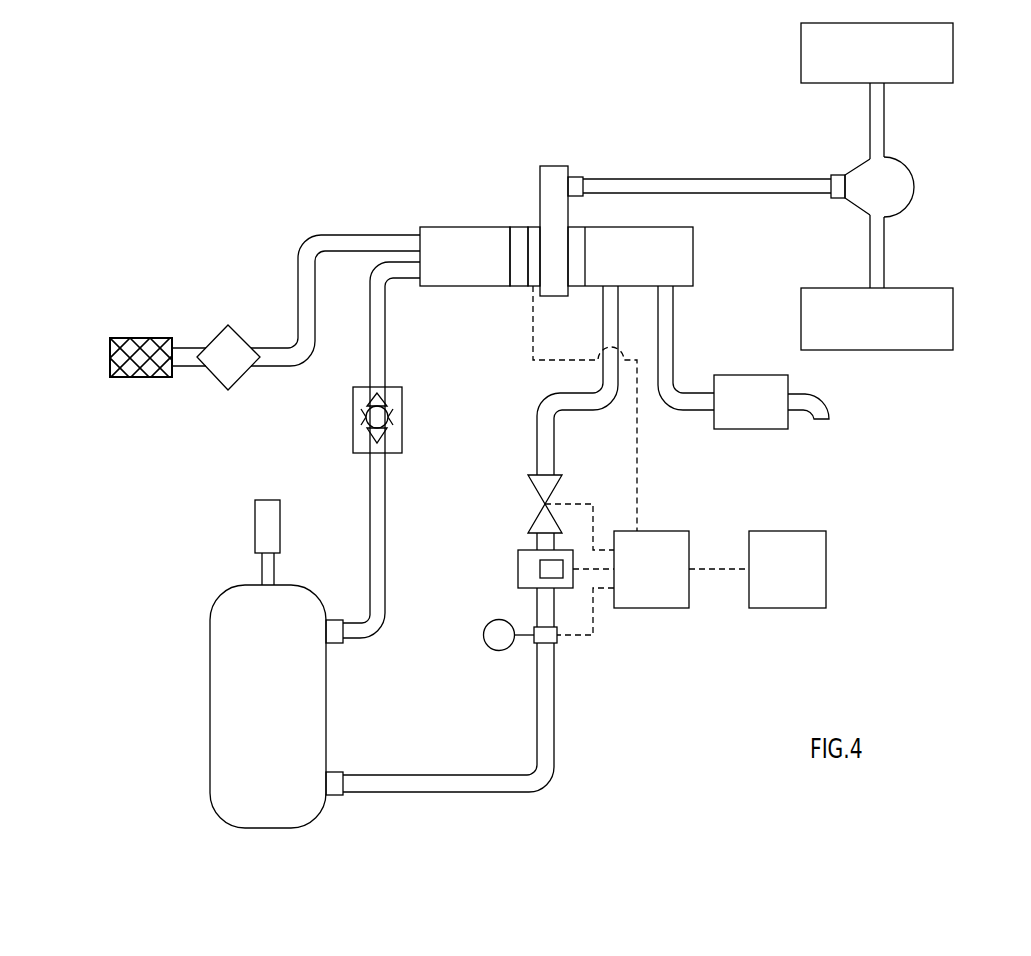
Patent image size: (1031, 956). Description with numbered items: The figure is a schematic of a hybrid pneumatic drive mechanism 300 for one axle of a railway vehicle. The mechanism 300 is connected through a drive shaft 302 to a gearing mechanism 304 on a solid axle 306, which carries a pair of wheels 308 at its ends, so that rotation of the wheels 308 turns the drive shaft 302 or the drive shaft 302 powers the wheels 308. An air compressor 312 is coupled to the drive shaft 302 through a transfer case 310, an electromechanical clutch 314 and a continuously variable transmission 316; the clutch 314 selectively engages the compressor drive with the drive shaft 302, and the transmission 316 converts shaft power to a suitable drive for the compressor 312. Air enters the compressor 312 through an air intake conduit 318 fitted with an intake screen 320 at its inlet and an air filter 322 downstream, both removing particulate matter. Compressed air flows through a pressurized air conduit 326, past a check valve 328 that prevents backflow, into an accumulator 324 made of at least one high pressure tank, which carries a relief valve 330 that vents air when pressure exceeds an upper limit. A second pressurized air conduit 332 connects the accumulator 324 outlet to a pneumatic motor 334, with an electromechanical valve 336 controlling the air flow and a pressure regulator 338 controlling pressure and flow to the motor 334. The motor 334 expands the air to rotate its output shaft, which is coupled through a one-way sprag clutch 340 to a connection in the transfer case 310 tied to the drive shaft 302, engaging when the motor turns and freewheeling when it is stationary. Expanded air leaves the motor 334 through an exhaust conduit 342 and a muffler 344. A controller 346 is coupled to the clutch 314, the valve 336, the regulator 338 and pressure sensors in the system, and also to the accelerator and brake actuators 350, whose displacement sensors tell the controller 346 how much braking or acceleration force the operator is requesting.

The hybrid pneumatic drive mechanism 300 is at (376, 137).
The drive shaft 302 is at (620, 179).
The gearing mechanism 304 is at (884, 190).
The solid axle 306 is at (884, 110).
The wheels 308 is at (953, 53).
The transfer case 310 is at (555, 166).
The air compressor 312 is at (457, 286).
The electromechanical clutch 314 is at (533, 227).
The continuously variable transmission 316 is at (516, 286).
The air intake conduit 318 is at (298, 313).
The intake screen 320 is at (140, 377).
The air filter 322 is at (244, 374).
The accumulator 324 is at (210, 707).
The pressurized air conduit 326 is at (385, 557).
The check valve 328 is at (370, 415).
The relief valve 330 is at (255, 527).
The pressurized air conduit 332 is at (437, 792).
The pneumatic motor 334 is at (693, 257).
The electromechanical valve 336 is at (537, 493).
The pressure regulator 338 is at (518, 570).
The sprag clutch 340 is at (578, 287).
The exhaust conduit 342 is at (674, 345).
The muffler 344 is at (752, 430).
The controller 346 is at (650, 608).
The accelerator and brake actuators 350 is at (788, 608).